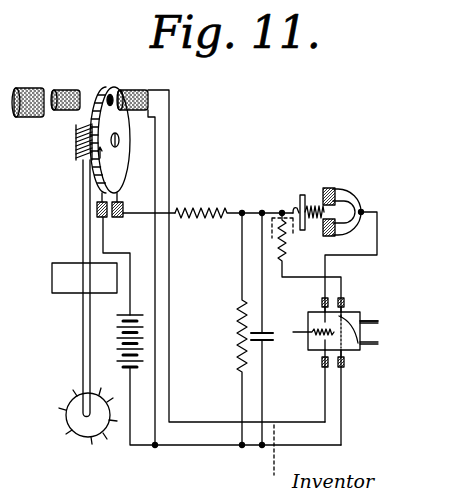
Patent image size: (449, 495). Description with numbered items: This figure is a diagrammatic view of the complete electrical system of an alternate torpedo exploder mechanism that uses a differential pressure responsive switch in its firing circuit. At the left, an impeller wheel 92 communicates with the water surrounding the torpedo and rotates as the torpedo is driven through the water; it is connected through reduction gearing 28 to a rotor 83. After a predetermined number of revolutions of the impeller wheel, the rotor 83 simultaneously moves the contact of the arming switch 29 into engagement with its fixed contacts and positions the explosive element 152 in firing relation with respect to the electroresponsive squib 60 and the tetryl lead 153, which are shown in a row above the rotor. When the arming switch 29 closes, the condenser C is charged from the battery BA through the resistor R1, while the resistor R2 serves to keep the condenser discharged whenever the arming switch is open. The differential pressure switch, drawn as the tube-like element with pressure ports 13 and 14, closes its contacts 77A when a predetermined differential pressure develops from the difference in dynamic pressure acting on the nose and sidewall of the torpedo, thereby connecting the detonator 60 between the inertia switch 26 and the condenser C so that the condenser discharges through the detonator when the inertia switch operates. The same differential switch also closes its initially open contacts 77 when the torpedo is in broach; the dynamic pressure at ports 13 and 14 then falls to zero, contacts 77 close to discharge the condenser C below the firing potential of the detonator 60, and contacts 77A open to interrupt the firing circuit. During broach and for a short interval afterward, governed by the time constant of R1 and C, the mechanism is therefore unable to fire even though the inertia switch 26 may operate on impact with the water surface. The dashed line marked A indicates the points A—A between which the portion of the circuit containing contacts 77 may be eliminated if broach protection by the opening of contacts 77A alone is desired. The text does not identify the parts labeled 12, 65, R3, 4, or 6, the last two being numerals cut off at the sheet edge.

The tetryl lead 153 is at (63, 90).
The explosive element 152 is at (114, 90).
The electroresponsive squib 60 is at (143, 88).
The rotor 83 is at (127, 148).
The arming switch 29 is at (107, 218).
The reduction gearing 28 is at (84, 278).
The impeller wheel 92 is at (80, 440).
The inertia switch 26 is at (350, 198).
The vacuum tube 12 is at (343, 356).
The port 14 is at (313, 331).
The contacts 77 is at (325, 320).
The contacts 77A is at (340, 347).
The tube electrode 65 is at (342, 318).
The port 13 is at (380, 342).
The battery BA is at (119, 341).
The resistor R1 is at (234, 205).
The resistor R2 is at (230, 329).
The resistor R3 is at (309, 262).
The condenser C is at (265, 329).
The points A— A is at (279, 355).
The partial numeral 4 is at (4, 361).
The partial numeral 6 is at (4, 417).